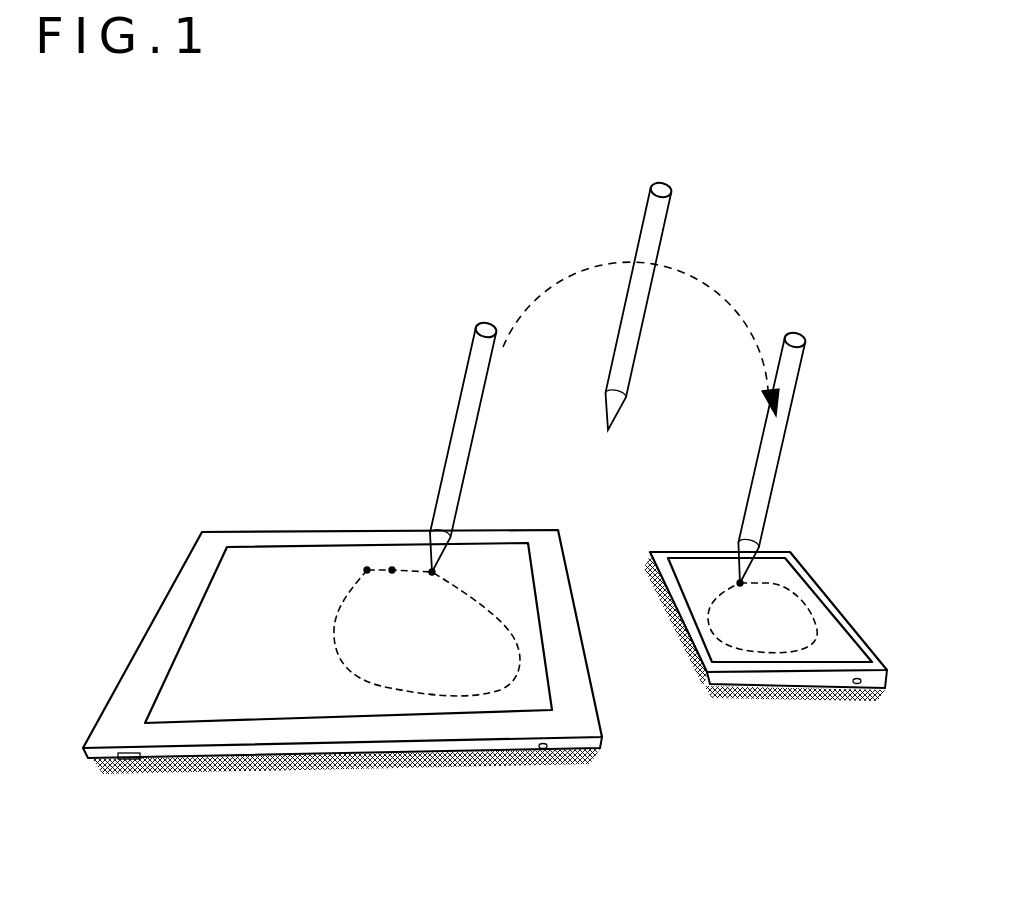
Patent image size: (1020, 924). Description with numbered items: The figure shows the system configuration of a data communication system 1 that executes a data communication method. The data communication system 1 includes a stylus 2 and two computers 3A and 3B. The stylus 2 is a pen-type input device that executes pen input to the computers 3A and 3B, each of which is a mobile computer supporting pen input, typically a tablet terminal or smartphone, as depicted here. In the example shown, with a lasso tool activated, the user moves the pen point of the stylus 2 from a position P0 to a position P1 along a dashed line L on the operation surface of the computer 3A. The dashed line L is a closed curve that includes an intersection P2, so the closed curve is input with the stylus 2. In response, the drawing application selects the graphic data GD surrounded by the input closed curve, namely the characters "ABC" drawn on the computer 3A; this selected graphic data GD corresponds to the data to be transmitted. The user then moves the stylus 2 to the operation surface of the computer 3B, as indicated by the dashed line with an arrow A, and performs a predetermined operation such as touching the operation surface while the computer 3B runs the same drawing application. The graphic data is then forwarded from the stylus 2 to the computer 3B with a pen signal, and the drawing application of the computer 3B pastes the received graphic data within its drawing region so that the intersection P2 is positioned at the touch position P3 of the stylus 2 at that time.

The data communication system 1 is at (255, 315).
The stylus 2 is at (486, 321).
The computer 3A is at (539, 530).
The computer 3B is at (663, 555).
The dashed line with an arrow A is at (581, 272).
The dashed line L is at (523, 670).
The graphic data GD is at (462, 672).
The position P0 is at (367, 568).
The position P1 is at (434, 569).
The intersection P2 is at (392, 568).
The touch position P3 is at (739, 581).